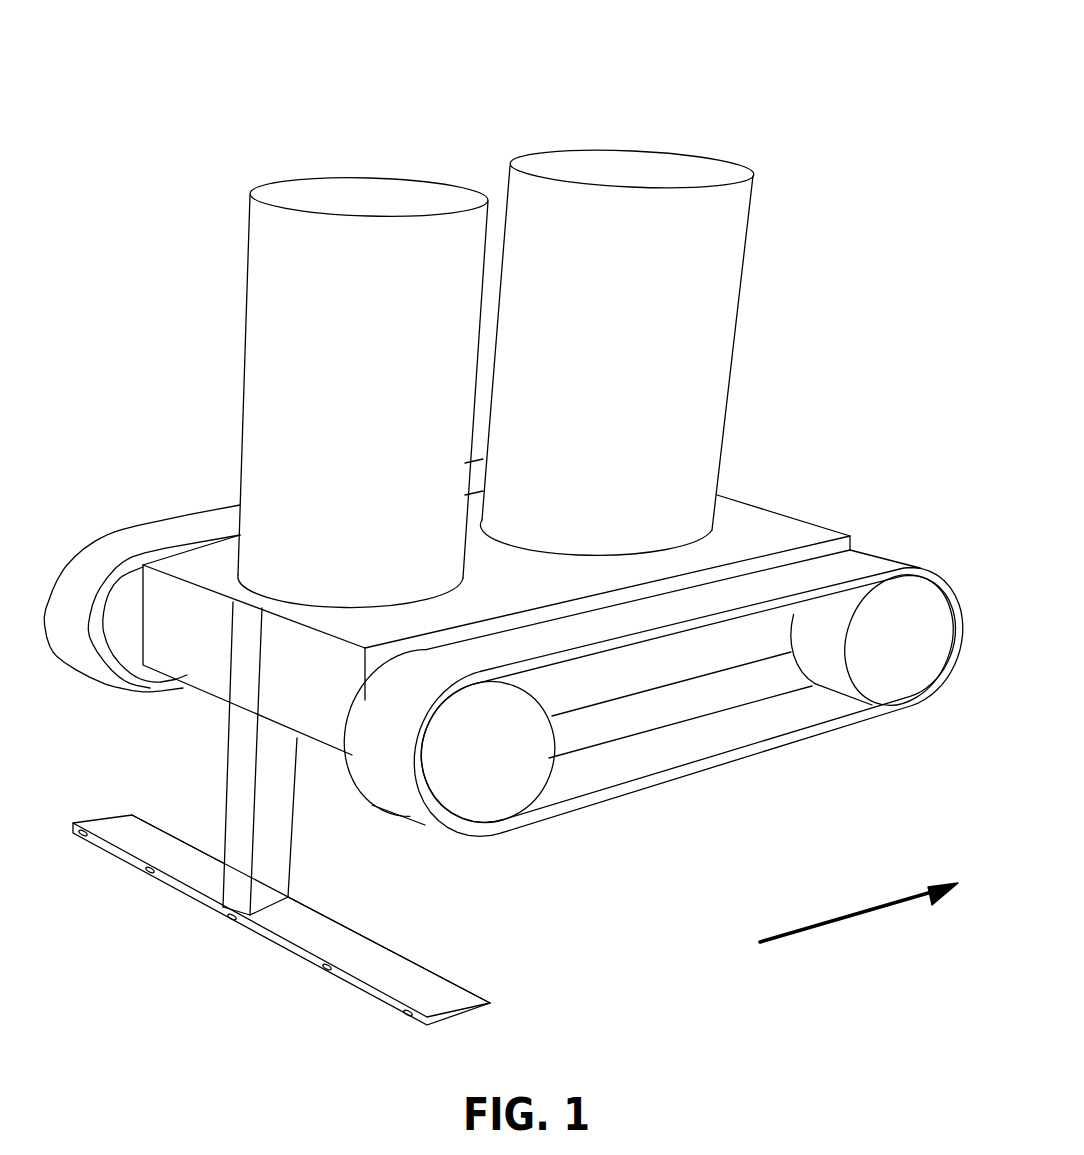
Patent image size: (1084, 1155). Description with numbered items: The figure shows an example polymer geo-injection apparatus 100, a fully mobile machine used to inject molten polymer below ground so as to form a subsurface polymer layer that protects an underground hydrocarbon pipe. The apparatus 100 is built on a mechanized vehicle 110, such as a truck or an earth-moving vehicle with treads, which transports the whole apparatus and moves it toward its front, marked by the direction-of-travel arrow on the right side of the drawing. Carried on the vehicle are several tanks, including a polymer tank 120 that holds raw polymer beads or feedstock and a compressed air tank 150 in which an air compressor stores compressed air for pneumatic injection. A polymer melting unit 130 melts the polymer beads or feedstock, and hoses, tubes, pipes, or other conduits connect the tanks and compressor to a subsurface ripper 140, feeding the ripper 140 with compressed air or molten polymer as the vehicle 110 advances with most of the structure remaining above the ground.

The polymer geo-injection apparatus 100 is at (803, 70).
The mechanized vehicle 110 is at (752, 762).
The polymer tank 120 is at (749, 282).
The polymer melting unit 130 is at (798, 514).
The subsurface ripper 140 is at (190, 898).
The compressed air tank 150 is at (240, 340).